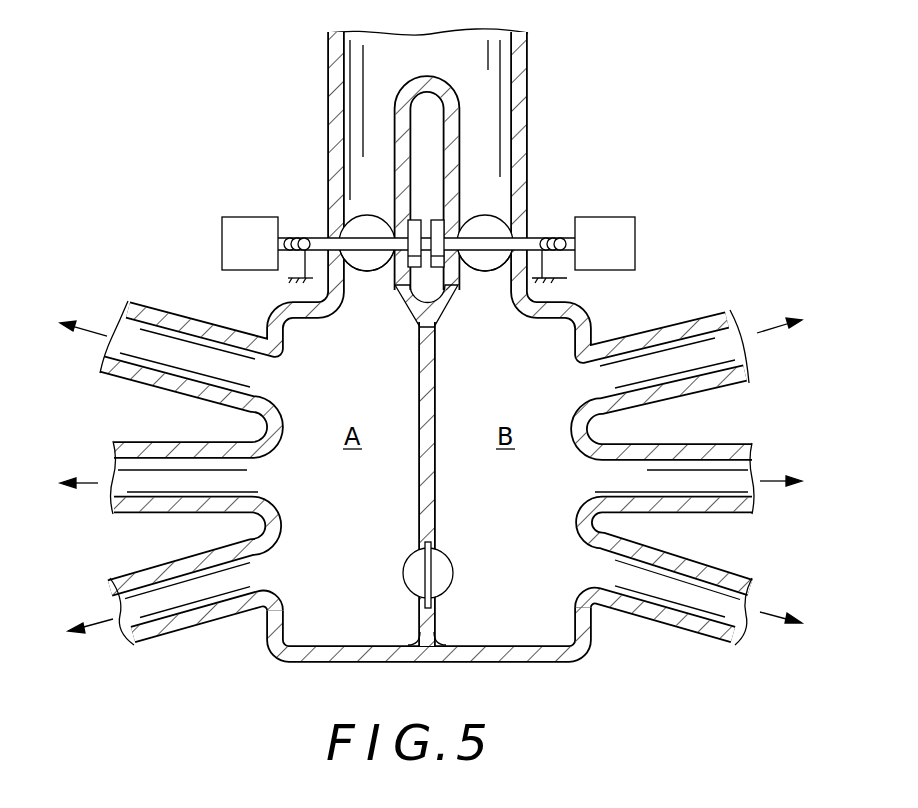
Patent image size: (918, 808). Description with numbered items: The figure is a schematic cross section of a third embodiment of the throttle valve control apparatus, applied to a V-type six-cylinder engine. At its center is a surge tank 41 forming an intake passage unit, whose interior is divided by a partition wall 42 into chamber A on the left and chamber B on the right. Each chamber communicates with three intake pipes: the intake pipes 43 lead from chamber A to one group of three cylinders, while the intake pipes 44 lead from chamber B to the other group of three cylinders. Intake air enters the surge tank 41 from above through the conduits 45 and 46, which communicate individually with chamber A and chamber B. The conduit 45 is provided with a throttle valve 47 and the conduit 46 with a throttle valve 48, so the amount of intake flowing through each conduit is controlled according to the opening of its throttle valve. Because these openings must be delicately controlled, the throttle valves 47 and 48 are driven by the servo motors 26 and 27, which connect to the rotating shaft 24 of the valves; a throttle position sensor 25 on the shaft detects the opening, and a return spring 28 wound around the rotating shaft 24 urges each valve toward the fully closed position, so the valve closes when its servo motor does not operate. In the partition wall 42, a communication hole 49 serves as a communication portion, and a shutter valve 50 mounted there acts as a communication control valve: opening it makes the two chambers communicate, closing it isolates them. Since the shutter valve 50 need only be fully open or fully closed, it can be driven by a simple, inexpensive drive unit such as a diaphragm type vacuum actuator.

The rotating shaft 24 is at (368, 216).
The throttle position sensor 25 is at (417, 220).
The servo motor 26 is at (224, 221).
The servo motor 27 is at (636, 203).
The return spring 28 is at (292, 236).
The surge tank 41 is at (586, 317).
The partition wall 42 is at (434, 516).
The intake pipes 43 is at (154, 313).
The intake pipes 44 is at (744, 375).
The conduit 45 is at (332, 148).
The conduit 46 is at (524, 145).
The throttle valve 47 is at (366, 263).
The throttle valve 48 is at (480, 265).
The communication hole 49 is at (433, 552).
The shutter valve 50 is at (443, 589).